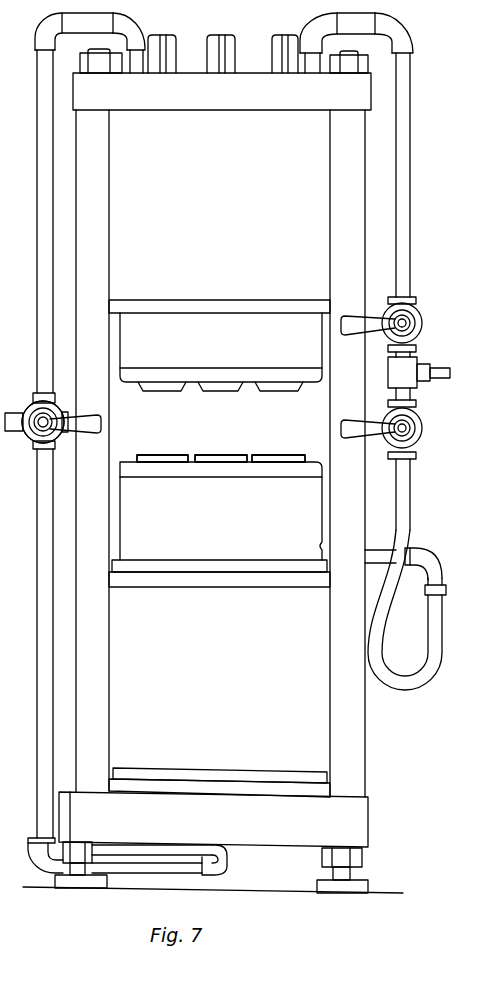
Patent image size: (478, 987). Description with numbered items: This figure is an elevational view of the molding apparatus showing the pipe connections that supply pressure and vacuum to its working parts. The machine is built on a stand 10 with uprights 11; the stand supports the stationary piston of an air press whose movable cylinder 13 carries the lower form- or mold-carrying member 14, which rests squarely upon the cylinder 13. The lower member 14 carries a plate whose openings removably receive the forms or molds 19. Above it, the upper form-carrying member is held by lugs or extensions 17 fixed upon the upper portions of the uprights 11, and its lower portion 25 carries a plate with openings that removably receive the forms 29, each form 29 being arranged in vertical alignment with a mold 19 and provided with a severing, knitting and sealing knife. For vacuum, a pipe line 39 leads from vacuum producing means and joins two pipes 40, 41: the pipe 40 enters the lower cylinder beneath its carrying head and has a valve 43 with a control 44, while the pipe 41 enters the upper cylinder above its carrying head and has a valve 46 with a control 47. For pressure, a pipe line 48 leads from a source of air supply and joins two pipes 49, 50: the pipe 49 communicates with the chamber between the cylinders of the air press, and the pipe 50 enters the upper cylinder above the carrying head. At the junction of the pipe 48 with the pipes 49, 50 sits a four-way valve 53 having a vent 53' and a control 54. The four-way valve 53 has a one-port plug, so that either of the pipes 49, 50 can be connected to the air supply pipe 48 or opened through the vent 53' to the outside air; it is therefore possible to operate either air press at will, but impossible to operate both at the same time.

The stand 10 is at (352, 824).
The uprights 11 is at (86, 711).
The movable cylinder 13 is at (315, 715).
The lower form- or mold-carrying member 14 is at (128, 485).
The lugs or extensions 17 is at (362, 97).
The forms or molds 19 is at (175, 455).
The lower portion of the upper form-carrying member 25 is at (142, 358).
The forms 29 is at (255, 390).
The pipe line 39 is at (445, 380).
The pipe 40 is at (402, 520).
The pipe 41 is at (403, 258).
The valve 43 is at (407, 441).
The control 44 is at (357, 434).
The valve 46 is at (419, 320).
The control 47 is at (372, 322).
The pipe line 48 is at (12, 413).
The pipe 49 is at (38, 522).
The pipe 50 is at (43, 300).
The four-way valve 53 is at (32, 438).
The vent 53' is at (36, 386).
The control 54 is at (73, 434).